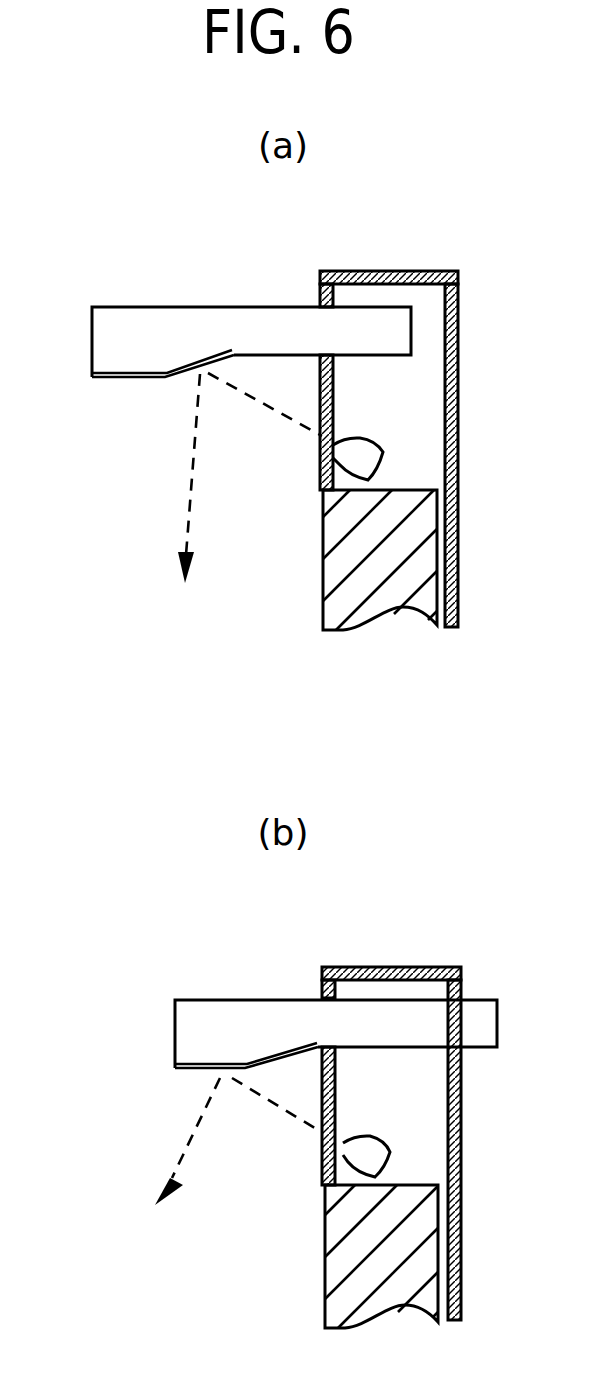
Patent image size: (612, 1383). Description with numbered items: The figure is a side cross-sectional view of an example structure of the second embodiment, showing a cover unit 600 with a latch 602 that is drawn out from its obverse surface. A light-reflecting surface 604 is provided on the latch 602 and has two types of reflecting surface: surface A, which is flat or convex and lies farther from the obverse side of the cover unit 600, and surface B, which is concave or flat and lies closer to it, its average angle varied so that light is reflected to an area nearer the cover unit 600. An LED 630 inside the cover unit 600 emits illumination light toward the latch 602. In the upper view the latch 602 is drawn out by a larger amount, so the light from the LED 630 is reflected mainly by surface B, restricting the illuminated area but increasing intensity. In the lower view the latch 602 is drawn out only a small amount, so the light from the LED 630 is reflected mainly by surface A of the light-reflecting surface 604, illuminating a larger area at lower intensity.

The cover unit 600 is at (402, 271).
The latch 602 is at (157, 307).
The light-reflecting surface 604 is at (178, 380).
The LED 630 is at (345, 453).